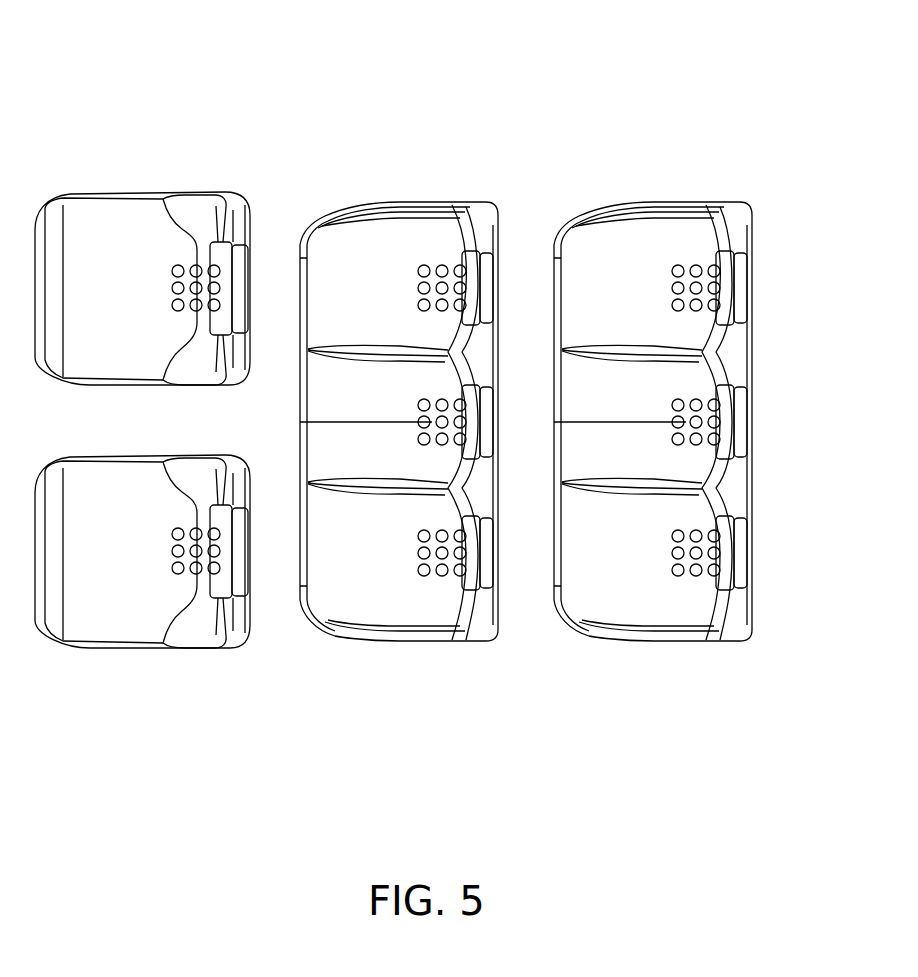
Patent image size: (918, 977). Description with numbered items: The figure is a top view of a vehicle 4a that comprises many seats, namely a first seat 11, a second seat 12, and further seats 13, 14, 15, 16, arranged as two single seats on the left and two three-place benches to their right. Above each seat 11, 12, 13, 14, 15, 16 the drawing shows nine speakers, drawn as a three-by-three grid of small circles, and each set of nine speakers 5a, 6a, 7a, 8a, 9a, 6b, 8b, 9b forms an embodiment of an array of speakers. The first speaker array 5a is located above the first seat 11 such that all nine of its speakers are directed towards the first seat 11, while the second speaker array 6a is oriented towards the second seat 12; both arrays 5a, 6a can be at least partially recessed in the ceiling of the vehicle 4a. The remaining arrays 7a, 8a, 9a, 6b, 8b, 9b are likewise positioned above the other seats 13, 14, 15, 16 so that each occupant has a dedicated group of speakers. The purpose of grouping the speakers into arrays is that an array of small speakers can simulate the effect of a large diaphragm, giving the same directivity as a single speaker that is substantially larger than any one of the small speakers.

The vehicle 4a is at (437, 69).
The seat 13 is at (142, 179).
The first seat 11 is at (158, 664).
The seat 14 is at (410, 184).
The second seat 12 is at (402, 664).
The seat 15 is at (513, 416).
The seat 16 is at (766, 289).
The first speaker array 5a is at (160, 550).
The second speaker array 6a is at (412, 550).
The speaker array 6b is at (666, 550).
The speaker array 7a is at (160, 287).
The speaker array 8a is at (412, 287).
The speaker array 8b is at (666, 287).
The speaker array 9a is at (412, 435).
The speaker array 9b is at (666, 435).